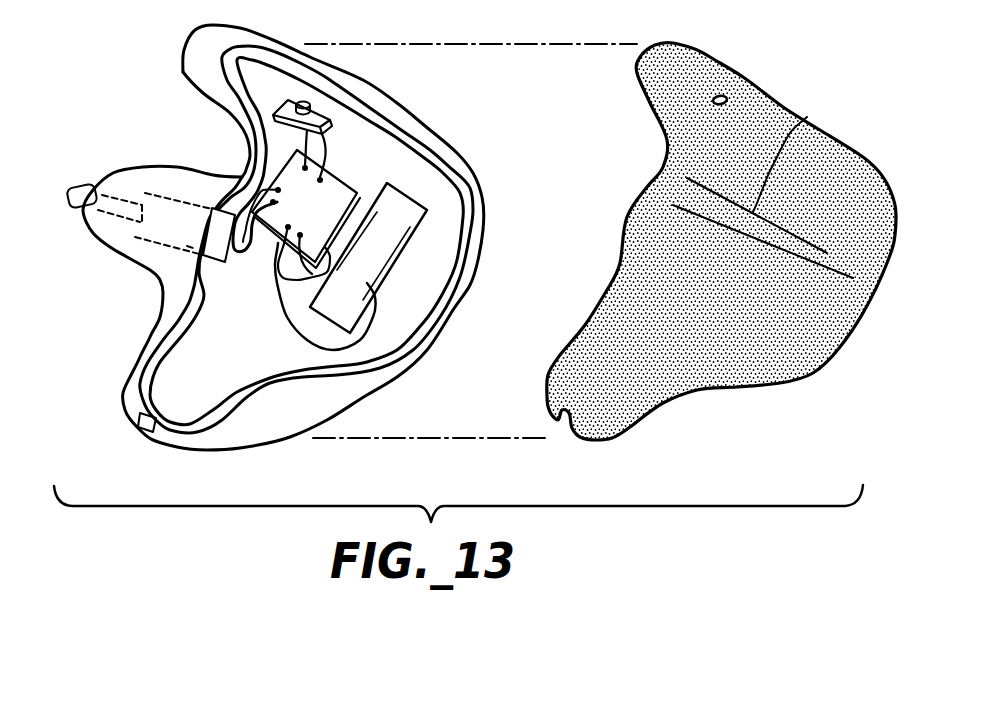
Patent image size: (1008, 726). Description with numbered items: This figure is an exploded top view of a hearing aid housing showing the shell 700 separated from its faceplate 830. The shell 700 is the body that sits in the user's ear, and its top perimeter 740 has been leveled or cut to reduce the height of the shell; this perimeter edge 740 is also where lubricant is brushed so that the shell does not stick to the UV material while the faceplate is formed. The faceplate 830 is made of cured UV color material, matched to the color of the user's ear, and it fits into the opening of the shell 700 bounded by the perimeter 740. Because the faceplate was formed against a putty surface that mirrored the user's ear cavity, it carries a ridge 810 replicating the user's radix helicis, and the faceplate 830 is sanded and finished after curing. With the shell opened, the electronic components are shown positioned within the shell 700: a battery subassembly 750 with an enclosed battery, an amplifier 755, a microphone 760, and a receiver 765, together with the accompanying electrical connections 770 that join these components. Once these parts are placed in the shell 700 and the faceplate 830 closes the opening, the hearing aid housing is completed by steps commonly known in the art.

The shell 700 is at (207, 82).
The top perimeter 740 is at (175, 53).
The battery subassembly 750 is at (410, 217).
The amplifier 755 is at (337, 193).
The microphone 760 is at (320, 110).
The receiver 765 is at (170, 250).
The electrical connections 770 is at (292, 327).
The ridge 810 is at (807, 116).
The faceplate 830 is at (752, 122).